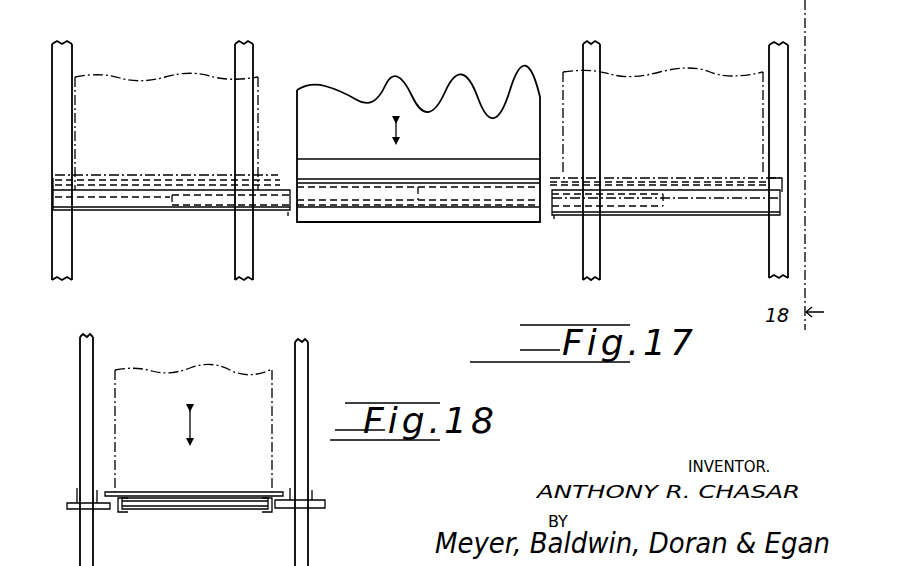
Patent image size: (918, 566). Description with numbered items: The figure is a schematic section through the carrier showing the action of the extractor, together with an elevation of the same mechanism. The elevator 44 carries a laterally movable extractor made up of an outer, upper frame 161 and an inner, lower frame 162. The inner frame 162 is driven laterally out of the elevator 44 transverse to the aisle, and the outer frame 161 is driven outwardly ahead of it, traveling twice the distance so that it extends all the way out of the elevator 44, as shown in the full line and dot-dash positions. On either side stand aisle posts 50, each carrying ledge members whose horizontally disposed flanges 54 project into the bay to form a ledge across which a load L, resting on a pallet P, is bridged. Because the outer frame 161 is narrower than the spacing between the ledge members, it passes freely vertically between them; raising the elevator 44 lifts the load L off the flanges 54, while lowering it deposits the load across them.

In FIG. 17, the aisle post 50 is at (70, 45).
In FIG. 18, the aisle post 50 is at (82, 392).
In FIG. 17, the elevator 44 is at (407, 97).
In FIG. 17, the outer, upper frame 161 is at (105, 200).
In FIG. 18, the outer, upper frame 161 is at (228, 496).
In FIG. 17, the inner, lower frame 162 is at (203, 207).
In FIG. 18, the inner, lower frame 162 is at (231, 506).
In FIG. 17, the horizontally disposed flange 54 is at (280, 213).
In FIG. 18, the horizontally disposed flange 54 is at (98, 512).
In FIG. 17, the pallet P is at (193, 175).
In FIG. 18, the pallet P is at (148, 492).
In FIG. 17, the load L is at (183, 77).
In FIG. 18, the load L is at (173, 370).